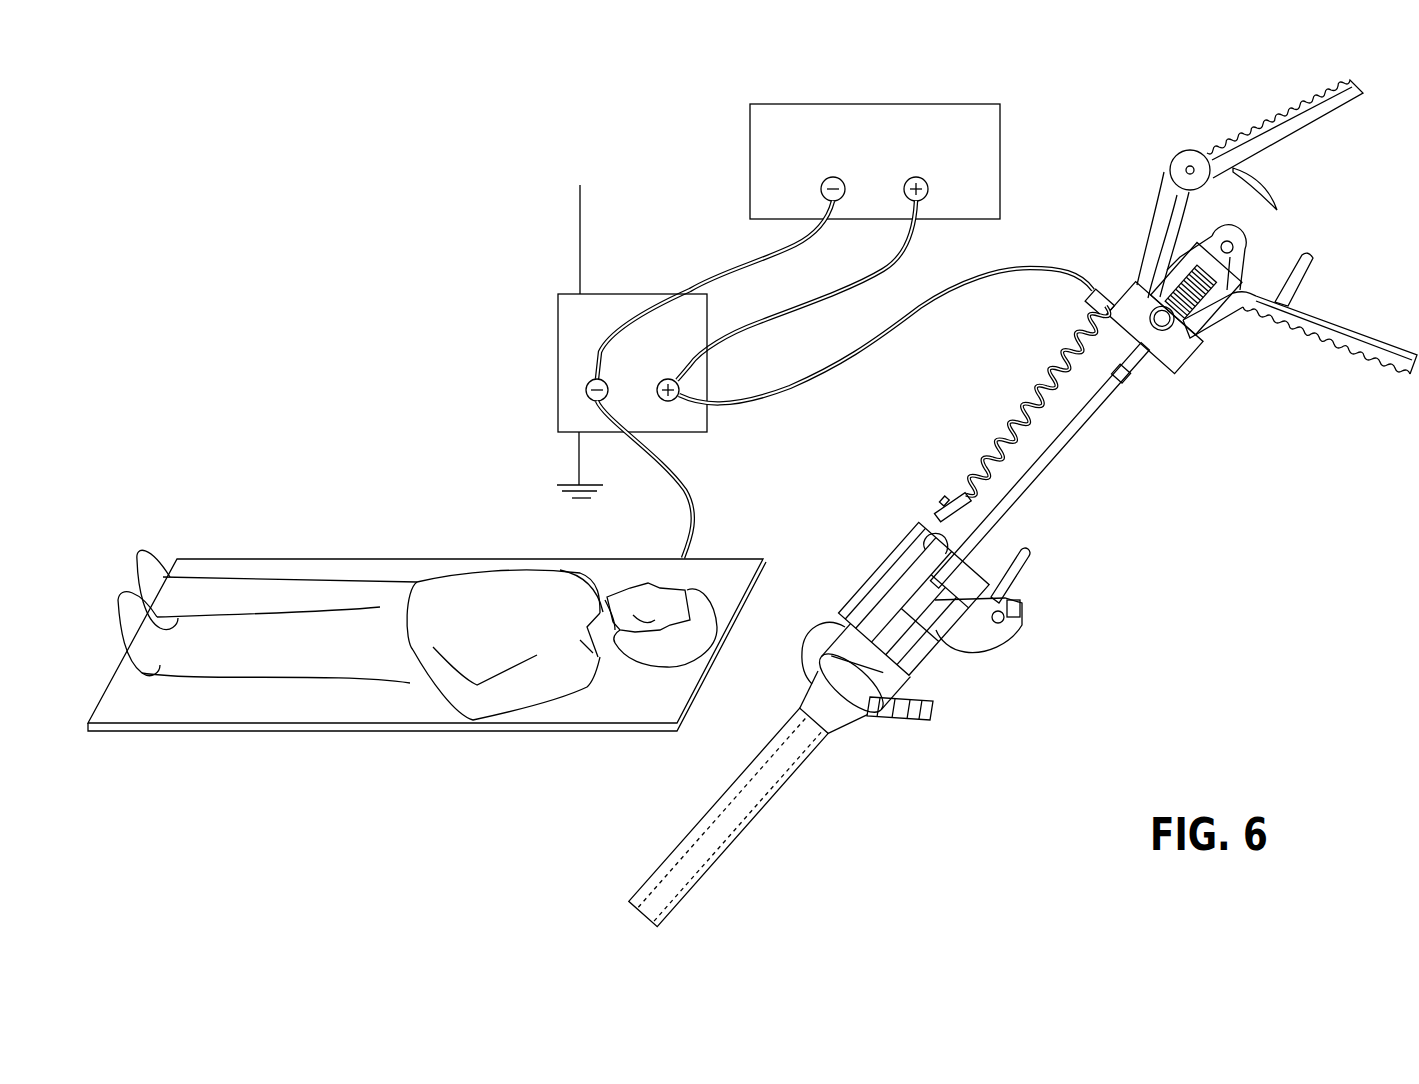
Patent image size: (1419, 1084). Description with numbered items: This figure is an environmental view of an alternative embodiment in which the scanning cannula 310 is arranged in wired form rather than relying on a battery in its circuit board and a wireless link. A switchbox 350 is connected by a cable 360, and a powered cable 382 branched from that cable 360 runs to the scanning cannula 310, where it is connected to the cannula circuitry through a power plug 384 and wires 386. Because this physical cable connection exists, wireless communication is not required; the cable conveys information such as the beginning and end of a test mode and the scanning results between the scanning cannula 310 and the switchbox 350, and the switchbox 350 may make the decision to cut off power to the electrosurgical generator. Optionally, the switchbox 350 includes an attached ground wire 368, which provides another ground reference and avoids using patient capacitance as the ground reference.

The scanning cannula 310 is at (958, 660).
The switchbox 350 is at (687, 420).
The cable 360 is at (878, 340).
The ground wire 368 is at (578, 463).
The powered cable 382 is at (1028, 408).
The power plug 384 is at (940, 517).
The wires 386 is at (922, 548).